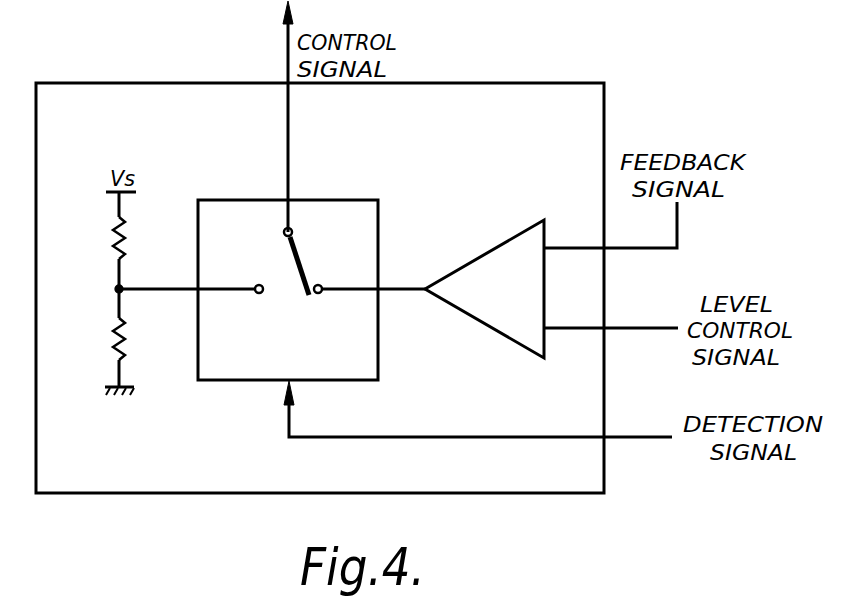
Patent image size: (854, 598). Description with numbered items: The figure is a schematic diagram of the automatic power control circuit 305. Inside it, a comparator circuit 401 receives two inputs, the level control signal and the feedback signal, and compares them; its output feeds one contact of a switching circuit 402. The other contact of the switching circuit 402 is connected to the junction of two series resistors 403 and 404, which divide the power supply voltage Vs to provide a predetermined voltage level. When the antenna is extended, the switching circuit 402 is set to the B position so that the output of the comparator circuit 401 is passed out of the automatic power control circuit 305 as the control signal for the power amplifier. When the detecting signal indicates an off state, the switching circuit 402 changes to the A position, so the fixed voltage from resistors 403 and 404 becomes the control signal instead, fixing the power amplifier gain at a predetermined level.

The automatic power control circuit 305 is at (548, 83).
The comparator circuit 401 is at (489, 250).
The switching circuit 402 is at (325, 200).
The resistor 403 is at (110, 236).
The resistor 404 is at (112, 332).